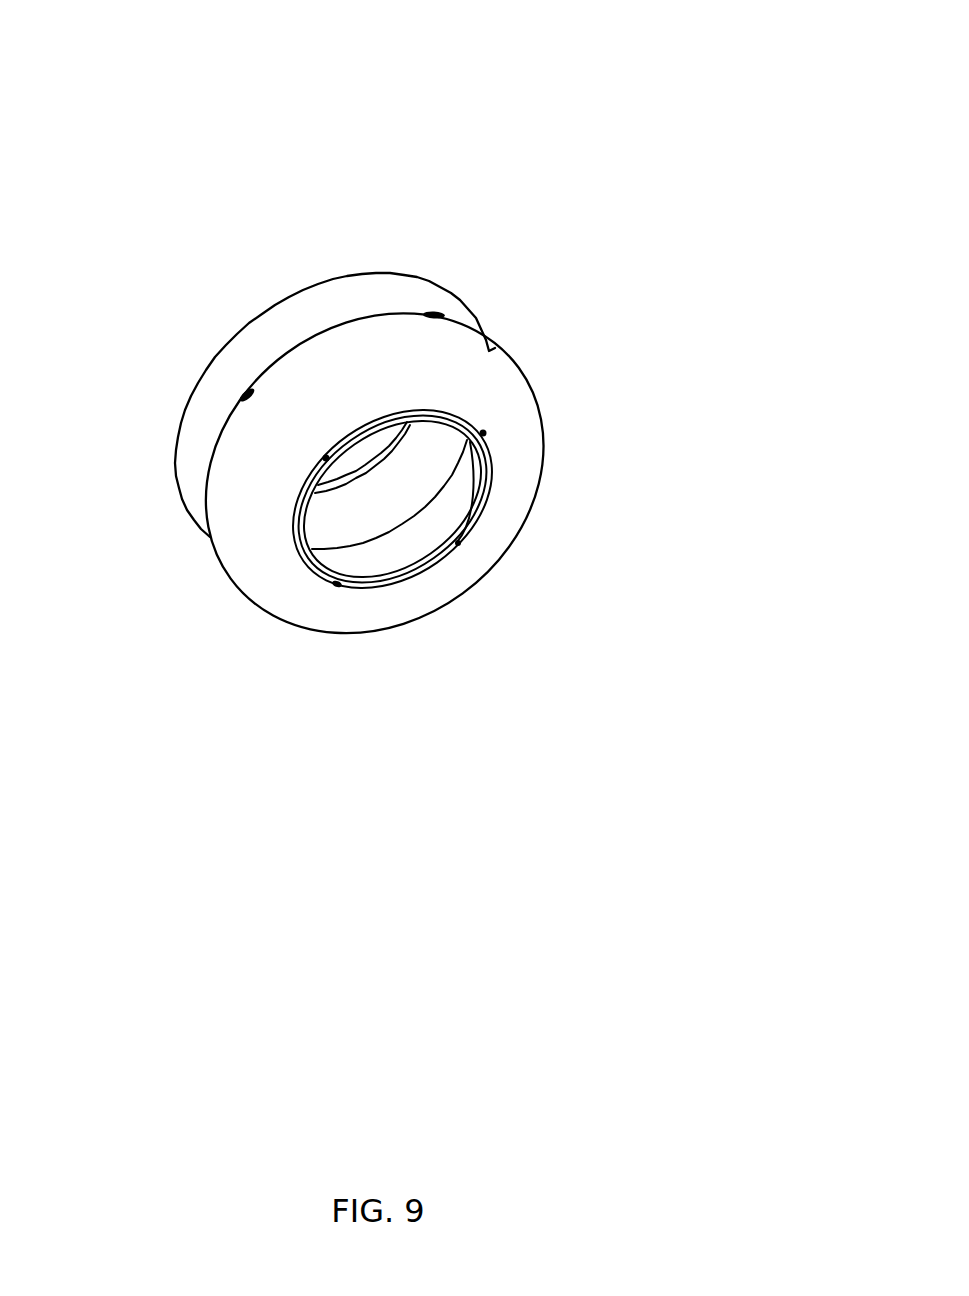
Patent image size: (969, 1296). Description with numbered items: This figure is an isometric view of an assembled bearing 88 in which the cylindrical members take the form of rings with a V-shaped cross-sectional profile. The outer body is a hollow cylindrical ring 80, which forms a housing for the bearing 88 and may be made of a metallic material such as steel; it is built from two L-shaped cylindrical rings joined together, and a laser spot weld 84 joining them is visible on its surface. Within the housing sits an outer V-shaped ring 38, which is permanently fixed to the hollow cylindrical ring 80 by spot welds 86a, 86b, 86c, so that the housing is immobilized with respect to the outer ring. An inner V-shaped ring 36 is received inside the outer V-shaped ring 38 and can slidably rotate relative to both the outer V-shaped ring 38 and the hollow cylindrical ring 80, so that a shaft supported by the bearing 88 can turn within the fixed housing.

The bearing 88 is at (458, 122).
The hollow cylindrical ring 80 is at (453, 566).
The laser spot weld 84 is at (245, 396).
The outer V-shaped ring 38 is at (297, 552).
The inner V-shaped ring 36 is at (382, 548).
The spot weld 86a is at (337, 585).
The spot weld 86b is at (484, 432).
The spot weld 86c is at (326, 458).